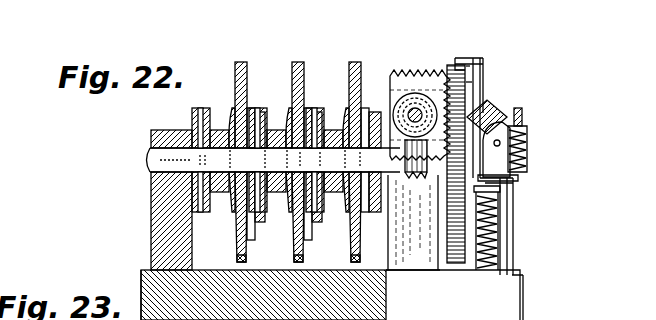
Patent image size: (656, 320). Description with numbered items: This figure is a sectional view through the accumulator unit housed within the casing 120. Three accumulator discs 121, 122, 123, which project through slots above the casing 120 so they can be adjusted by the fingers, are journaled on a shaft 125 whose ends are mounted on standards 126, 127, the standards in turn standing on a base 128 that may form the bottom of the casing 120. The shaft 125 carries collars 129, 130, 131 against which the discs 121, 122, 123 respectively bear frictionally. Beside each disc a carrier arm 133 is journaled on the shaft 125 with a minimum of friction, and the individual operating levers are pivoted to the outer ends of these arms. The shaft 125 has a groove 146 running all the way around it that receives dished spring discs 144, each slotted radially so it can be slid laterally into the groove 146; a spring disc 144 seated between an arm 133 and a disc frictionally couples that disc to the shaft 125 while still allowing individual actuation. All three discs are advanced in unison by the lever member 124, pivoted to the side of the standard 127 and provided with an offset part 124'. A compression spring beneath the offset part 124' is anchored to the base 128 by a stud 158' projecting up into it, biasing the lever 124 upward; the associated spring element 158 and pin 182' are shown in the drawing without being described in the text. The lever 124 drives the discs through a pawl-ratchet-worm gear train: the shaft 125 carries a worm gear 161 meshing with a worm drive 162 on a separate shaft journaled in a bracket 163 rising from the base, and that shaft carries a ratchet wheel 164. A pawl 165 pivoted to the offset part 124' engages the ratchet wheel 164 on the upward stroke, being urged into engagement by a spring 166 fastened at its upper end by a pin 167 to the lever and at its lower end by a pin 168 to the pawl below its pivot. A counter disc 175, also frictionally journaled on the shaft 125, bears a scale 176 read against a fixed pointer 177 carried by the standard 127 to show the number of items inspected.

The casing 120 is at (515, 291).
The accumulator disc 121 is at (243, 62).
The accumulator disc 122 is at (300, 62).
The accumulator disc 123 is at (356, 62).
The lever member 124 is at (514, 130).
The offset part 124' is at (507, 101).
The shaft 125 is at (157, 163).
The standard 126 is at (160, 196).
The standard 127 is at (506, 262).
The base 128 is at (498, 308).
The collar 129 is at (251, 108).
The collar 130 is at (308, 108).
The collar 131 is at (366, 108).
The carrier arm 133 is at (236, 212).
The spring disc 144 is at (231, 125).
The groove 146 is at (212, 163).
The compression spring 158 is at (539, 231).
The stud 158' is at (540, 220).
The worm gear 161 is at (410, 212).
The worm drive 162 is at (428, 105).
The bracket 163 is at (412, 262).
The ratchet wheel 164 is at (408, 72).
The pawl 165 is at (497, 140).
The spring 166 is at (528, 138).
The pin 167 is at (524, 112).
The pin 168 is at (516, 186).
The counter disc 175 is at (468, 78).
The scale 176 is at (468, 90).
The fixed pointer 177 is at (460, 62).
The gear pin 182' is at (413, 88).